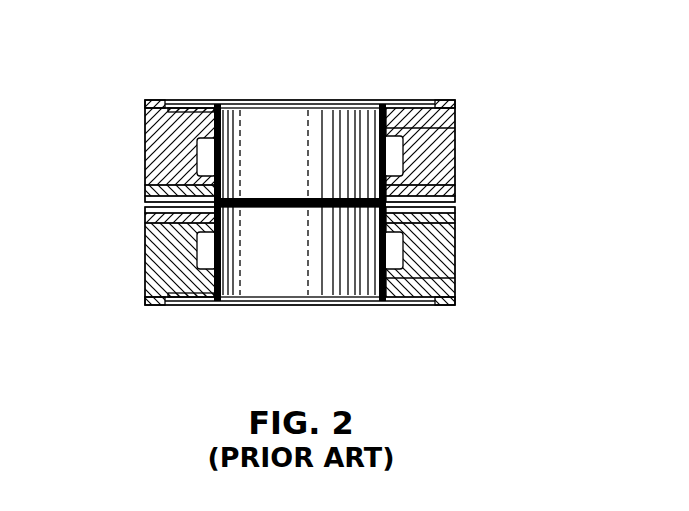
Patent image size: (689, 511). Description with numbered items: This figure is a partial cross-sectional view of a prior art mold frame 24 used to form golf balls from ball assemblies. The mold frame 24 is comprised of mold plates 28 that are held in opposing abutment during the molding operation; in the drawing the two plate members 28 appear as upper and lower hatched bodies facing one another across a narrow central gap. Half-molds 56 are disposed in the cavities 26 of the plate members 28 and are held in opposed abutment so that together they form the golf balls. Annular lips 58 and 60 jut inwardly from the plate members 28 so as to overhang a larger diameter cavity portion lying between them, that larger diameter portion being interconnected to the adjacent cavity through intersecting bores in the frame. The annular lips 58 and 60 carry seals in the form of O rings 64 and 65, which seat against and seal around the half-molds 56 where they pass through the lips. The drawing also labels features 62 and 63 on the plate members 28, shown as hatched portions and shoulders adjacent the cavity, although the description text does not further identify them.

The mold frame 24 is at (441, 98).
The cavities 26 is at (225, 155).
The mold plates 28 is at (147, 142).
The half-molds 56 is at (279, 146).
The annular lip 58 is at (430, 100).
The annular lip 60 is at (147, 190).
The nut body 62 is at (433, 120).
The shoulder / seal seat 63 is at (395, 180).
The O ring 64 is at (147, 113).
The O ring 65 is at (147, 177).